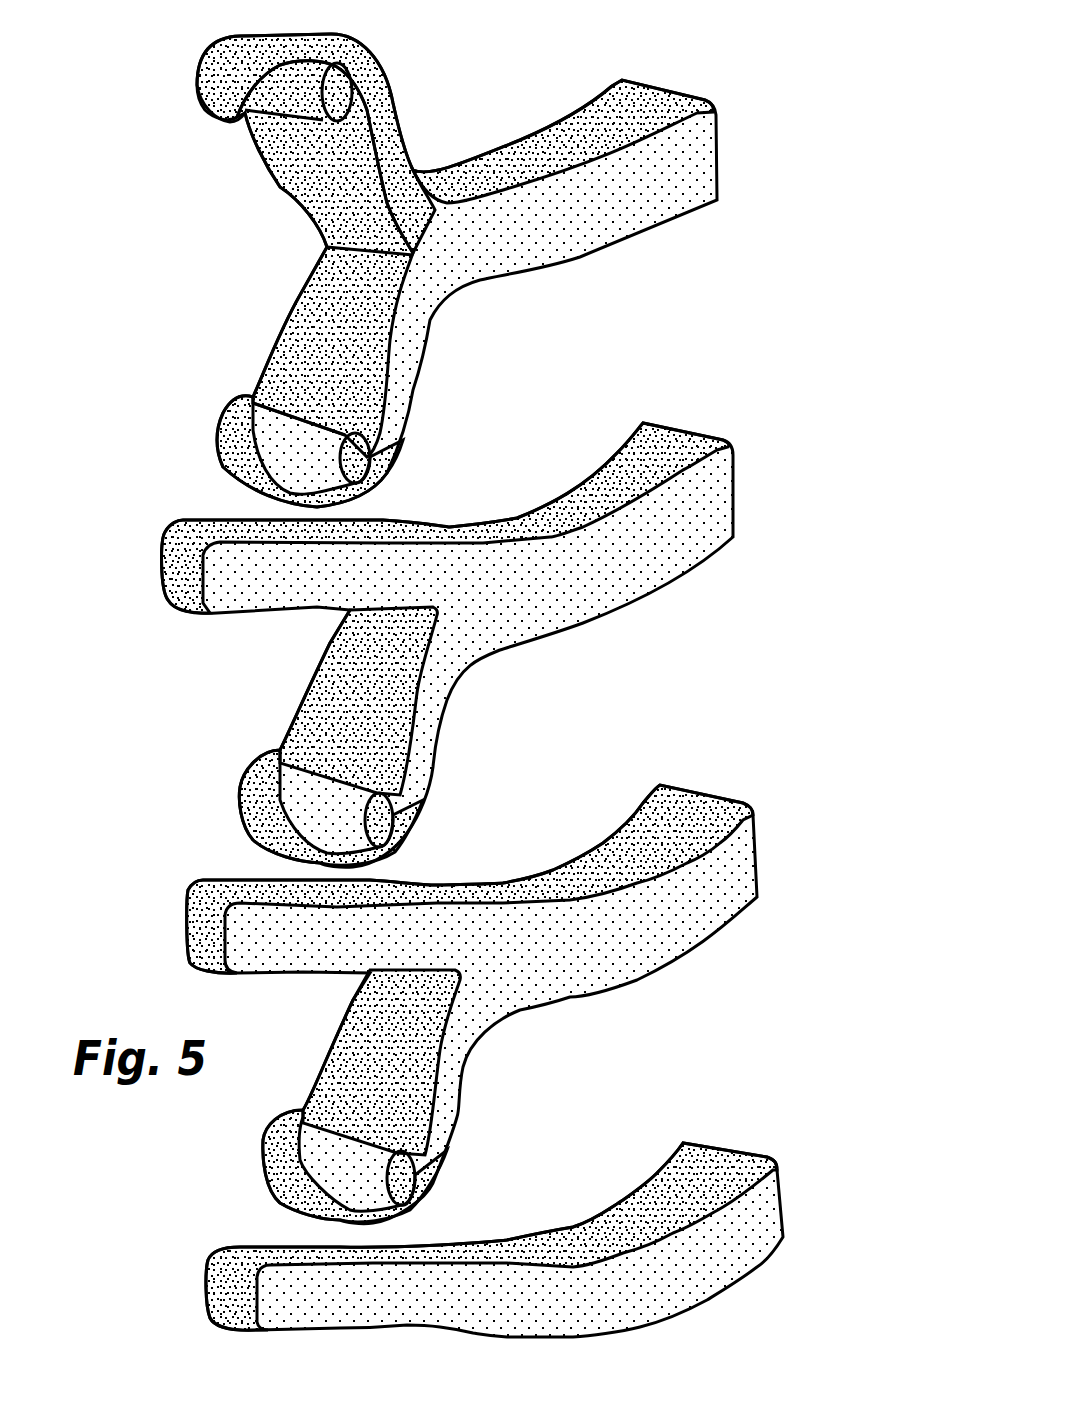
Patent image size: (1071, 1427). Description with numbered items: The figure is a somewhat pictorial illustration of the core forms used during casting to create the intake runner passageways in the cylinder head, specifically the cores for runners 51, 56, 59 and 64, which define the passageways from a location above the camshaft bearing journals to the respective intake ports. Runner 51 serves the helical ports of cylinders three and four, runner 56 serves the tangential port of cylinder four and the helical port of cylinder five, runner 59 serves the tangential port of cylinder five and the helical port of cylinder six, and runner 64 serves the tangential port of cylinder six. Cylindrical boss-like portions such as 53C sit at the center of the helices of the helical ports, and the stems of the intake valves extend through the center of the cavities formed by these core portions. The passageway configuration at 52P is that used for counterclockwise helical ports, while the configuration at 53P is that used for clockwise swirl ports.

The intake runner 51 is at (583, 220).
The counterclockwise helical passageway configuration 52P is at (186, 75).
The clockwise helical passageway configuration 53P is at (203, 440).
The cylindrical boss-like portion 53C is at (357, 460).
The intake runner 56 is at (617, 612).
The intake runner 59 is at (583, 953).
The intake runner 64 is at (517, 1300).